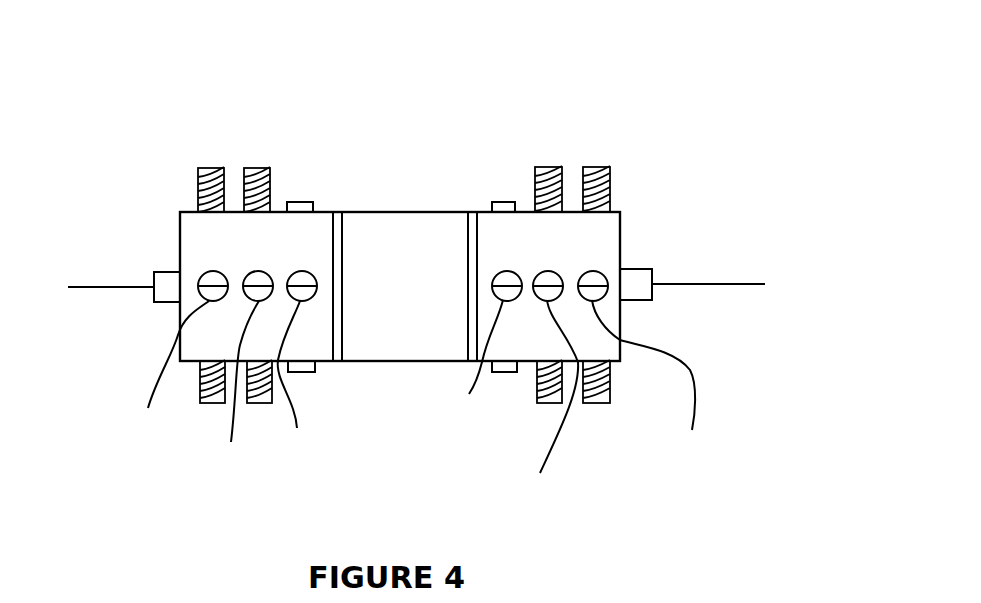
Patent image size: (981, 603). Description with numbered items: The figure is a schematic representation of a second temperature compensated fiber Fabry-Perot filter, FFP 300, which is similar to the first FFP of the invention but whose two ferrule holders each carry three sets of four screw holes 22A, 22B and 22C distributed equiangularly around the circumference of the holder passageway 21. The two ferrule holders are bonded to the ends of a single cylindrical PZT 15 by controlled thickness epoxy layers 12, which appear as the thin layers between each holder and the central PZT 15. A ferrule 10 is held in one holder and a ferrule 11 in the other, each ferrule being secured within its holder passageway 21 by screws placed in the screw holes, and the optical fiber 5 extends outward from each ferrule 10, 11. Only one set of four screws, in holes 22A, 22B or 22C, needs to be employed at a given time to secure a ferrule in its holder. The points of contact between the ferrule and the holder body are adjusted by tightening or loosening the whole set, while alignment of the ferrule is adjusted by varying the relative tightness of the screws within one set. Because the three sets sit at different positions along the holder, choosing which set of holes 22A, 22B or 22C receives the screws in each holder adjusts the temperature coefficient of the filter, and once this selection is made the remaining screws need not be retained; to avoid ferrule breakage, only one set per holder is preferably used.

The fiber Fabry-Perot filter 300 is at (567, 44).
The conductor wire 5 is at (98, 287).
The ferrule 10 is at (656, 278).
The ferrule 11 is at (167, 273).
The controlled thickness epoxy layer 12 is at (473, 212).
The PZT 15 is at (408, 362).
The passageway 21 is at (623, 267).
The set of four screw holes 22A is at (300, 202).
The set of four screw holes 22B is at (260, 168).
The set of four screw holes 22C is at (219, 168).